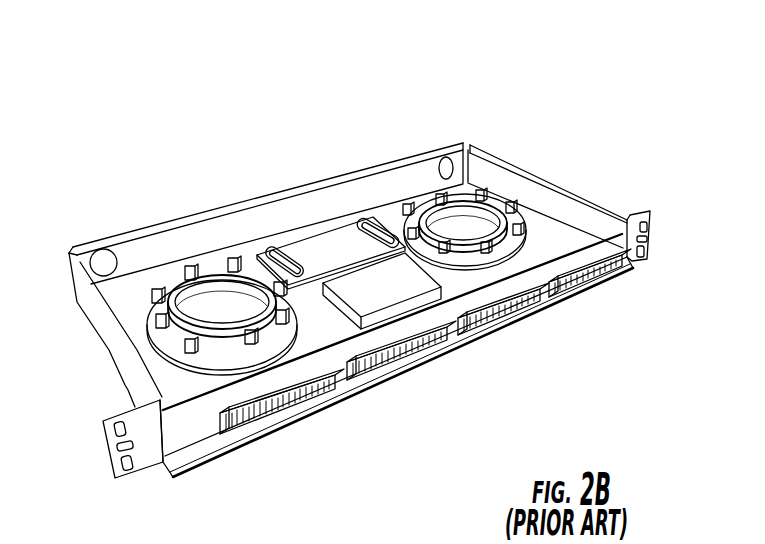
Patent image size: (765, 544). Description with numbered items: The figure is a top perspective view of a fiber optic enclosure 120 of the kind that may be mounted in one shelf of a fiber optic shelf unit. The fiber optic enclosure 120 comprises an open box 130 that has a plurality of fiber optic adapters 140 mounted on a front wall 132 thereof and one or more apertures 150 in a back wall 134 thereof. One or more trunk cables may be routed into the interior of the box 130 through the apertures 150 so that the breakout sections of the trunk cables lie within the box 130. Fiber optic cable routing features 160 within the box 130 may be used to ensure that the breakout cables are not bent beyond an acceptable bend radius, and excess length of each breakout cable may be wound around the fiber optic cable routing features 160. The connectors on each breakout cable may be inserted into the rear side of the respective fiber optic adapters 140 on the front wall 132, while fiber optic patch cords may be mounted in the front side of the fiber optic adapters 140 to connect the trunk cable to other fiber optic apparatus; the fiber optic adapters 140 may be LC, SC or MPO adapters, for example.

The fiber optic enclosure 120 is at (284, 94).
The open box 130 is at (197, 237).
The front wall 132 is at (185, 480).
The back wall 134 is at (260, 193).
The fiber optic adapters 140 is at (243, 427).
The apertures 150 is at (98, 258).
The fiber optic cable routing features 160 is at (198, 314).